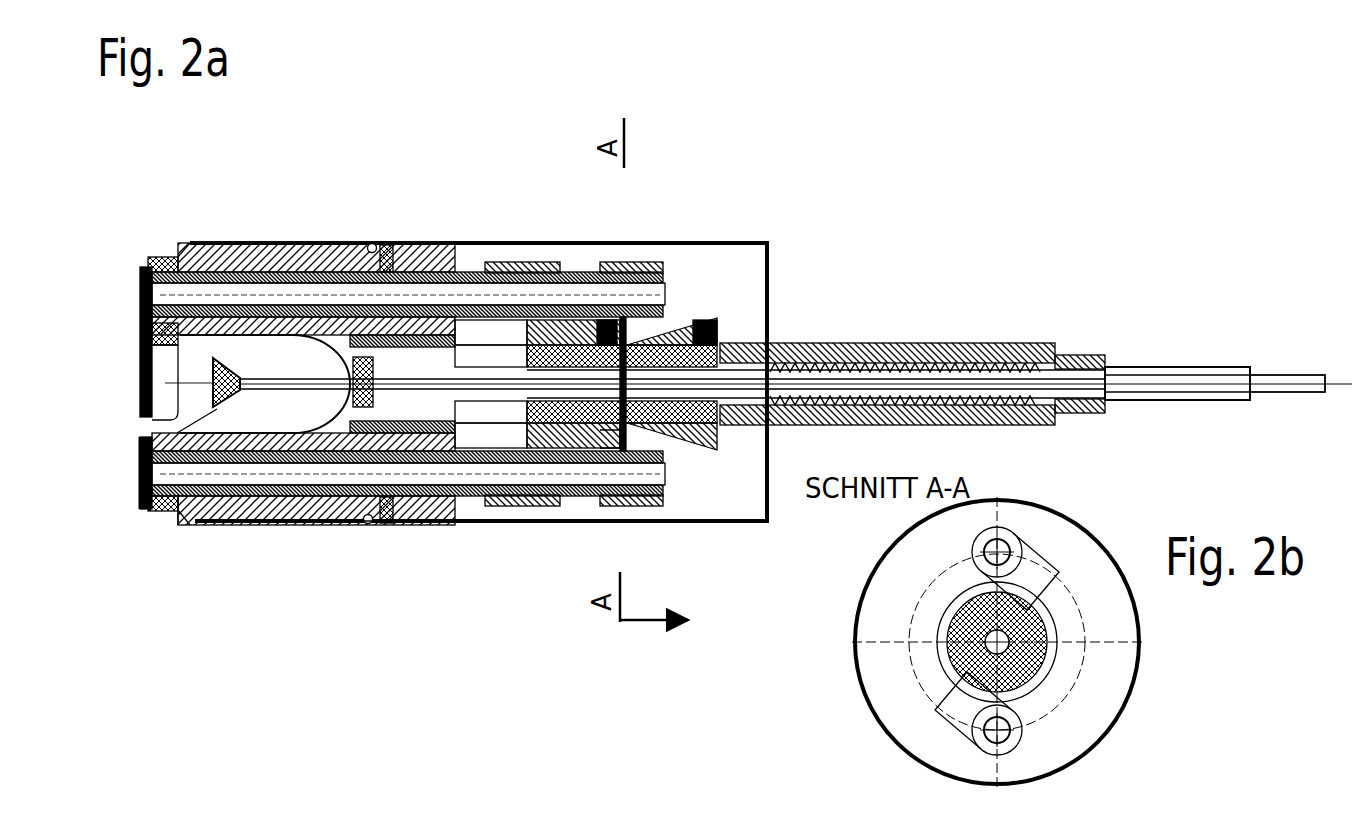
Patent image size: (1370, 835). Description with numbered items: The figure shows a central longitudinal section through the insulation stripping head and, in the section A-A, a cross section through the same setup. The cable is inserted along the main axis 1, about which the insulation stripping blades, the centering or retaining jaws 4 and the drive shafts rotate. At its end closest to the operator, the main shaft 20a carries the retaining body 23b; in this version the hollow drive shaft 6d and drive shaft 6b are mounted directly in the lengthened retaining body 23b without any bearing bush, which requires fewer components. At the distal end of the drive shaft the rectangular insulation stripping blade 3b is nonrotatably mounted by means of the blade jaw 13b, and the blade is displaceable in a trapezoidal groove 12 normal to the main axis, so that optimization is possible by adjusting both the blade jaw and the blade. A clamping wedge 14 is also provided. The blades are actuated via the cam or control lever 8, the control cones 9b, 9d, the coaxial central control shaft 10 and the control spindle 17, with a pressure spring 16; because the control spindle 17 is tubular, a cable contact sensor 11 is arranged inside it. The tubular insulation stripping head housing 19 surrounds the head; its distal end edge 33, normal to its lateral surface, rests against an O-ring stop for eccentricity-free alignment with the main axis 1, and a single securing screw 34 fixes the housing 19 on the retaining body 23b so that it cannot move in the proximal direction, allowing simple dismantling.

In FIG. 2a, the main axis 1 is at (220, 243).
In FIG. 2a, the centering or retaining jaws 4 is at (142, 268).
In FIG. 2a, the blade jaw 13b is at (160, 257).
In FIG. 2a, the clamping wedge 14 is at (152, 330).
In FIG. 2a, the trapezoidal groove 12 is at (150, 367).
In FIG. 2a, the insulation stripping blade 3b is at (140, 410).
In FIG. 2a, the cable contact sensor 11 is at (137, 480).
In FIG. 2a, the end edge 33 is at (178, 507).
In FIG. 2a, the securing screw 34 is at (368, 245).
In FIG. 2a, the drive shaft 6d is at (480, 262).
In FIG. 2a, the drive shaft 6b is at (590, 272).
In FIG. 2b, the drive shaft 6b is at (977, 727).
In FIG. 2a, the cam or control lever 8 is at (616, 268).
In FIG. 2b, the cam or control lever 8 is at (980, 542).
In FIG. 2a, the coaxial central control shaft 10 is at (717, 330).
In FIG. 2a, the pressure spring 16 is at (806, 343).
In FIG. 2a, the main shaft 20a is at (870, 343).
In FIG. 2a, the control spindle 17 is at (1115, 360).
In FIG. 2a, the insulation stripping head housing 19 is at (378, 522).
In FIG. 2b, the insulation stripping head housing 19 is at (885, 727).
In FIG. 2a, the retaining body 23b is at (405, 500).
In FIG. 2a, the control cone 9d is at (617, 440).
In FIG. 2a, the control cone 9b is at (586, 384).
In FIG. 2b, the control cone 9b is at (960, 593).